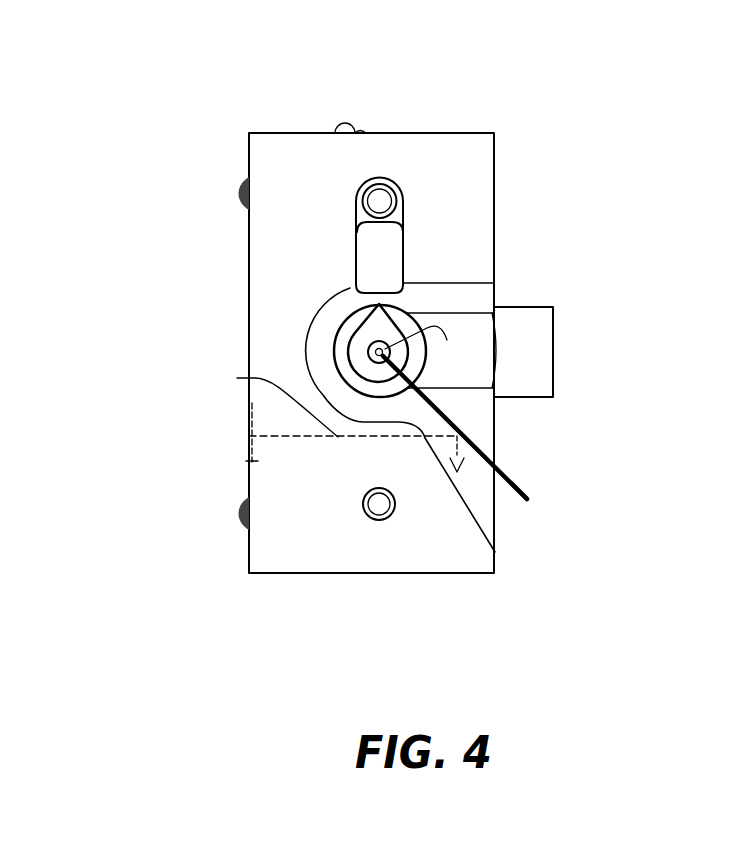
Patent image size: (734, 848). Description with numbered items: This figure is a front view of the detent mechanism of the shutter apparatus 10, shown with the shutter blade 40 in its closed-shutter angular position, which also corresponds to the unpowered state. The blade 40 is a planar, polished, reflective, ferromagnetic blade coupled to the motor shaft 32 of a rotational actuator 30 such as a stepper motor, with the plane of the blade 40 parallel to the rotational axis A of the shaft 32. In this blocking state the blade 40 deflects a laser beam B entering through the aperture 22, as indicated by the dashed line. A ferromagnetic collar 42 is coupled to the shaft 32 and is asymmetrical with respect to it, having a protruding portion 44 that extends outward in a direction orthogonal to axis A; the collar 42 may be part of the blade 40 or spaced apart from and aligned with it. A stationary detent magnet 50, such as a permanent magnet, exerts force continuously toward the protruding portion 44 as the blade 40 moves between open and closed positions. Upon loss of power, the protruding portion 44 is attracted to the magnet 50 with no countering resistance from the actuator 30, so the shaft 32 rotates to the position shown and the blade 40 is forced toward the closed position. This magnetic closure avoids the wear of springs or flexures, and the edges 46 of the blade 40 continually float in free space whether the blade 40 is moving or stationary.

The shutter apparatus 10 is at (55, 61).
The aperture 22 is at (247, 440).
The rotational actuator 30 is at (527, 351).
The motor shaft 32 is at (371, 348).
The shutter blade 40 is at (512, 472).
The ferromagnetic collar 42 is at (380, 324).
The protruding portion 44 is at (358, 305).
The edges 46 is at (527, 499).
The detent magnet 50 is at (385, 260).